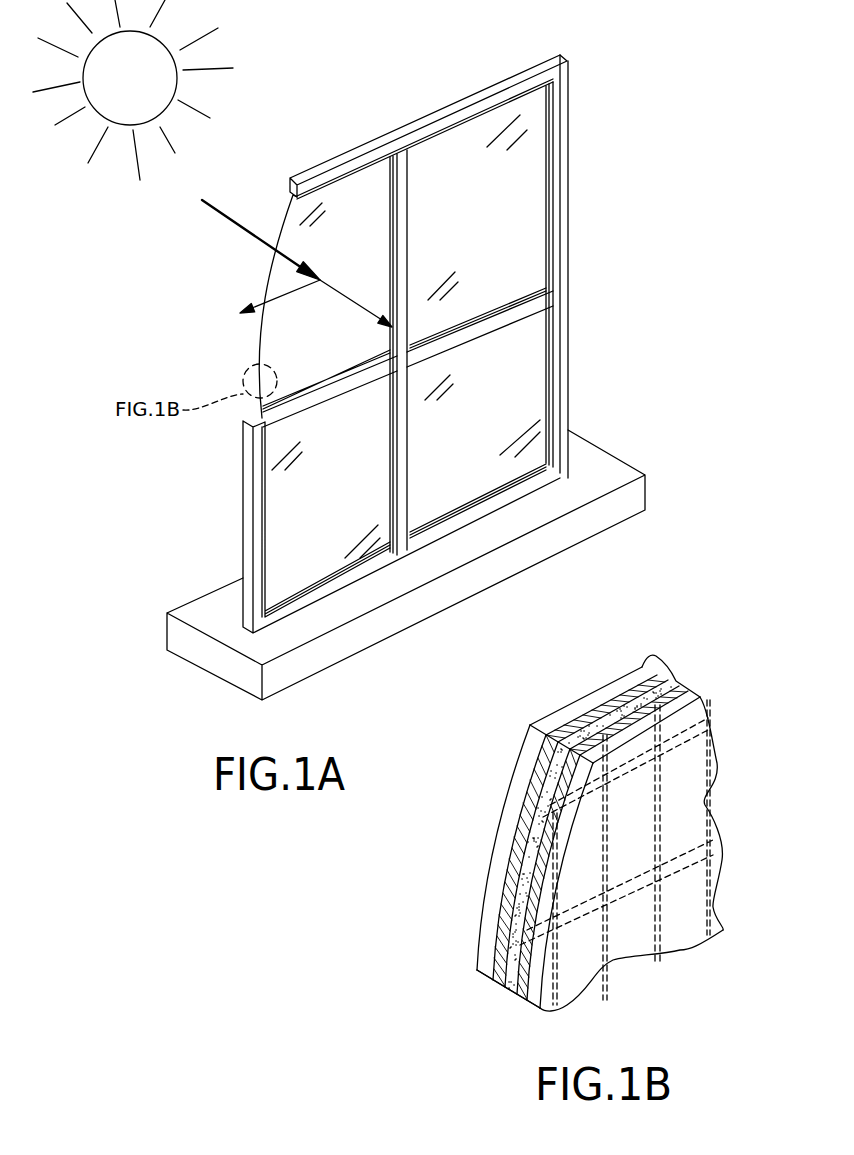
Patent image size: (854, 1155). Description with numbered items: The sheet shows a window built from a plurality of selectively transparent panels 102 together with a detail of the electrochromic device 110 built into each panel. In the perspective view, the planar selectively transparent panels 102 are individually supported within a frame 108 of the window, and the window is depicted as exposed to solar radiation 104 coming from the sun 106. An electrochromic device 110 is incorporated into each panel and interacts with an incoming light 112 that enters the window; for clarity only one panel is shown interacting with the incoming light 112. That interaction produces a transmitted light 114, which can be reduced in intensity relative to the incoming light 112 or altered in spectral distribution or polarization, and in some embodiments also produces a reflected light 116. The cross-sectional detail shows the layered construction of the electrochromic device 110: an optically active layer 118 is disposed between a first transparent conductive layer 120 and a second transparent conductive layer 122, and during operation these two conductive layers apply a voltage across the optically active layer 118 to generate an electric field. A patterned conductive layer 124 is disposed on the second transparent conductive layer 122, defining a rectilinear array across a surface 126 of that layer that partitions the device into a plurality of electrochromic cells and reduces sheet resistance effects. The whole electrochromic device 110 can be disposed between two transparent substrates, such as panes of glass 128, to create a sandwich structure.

In FIG. 1A, the selectively transparent panels 102 is at (360, 183).
In FIG. 1A, the solar radiation 104 is at (228, 68).
In FIG. 1A, the sun 106 is at (150, 88).
In FIG. 1A, the frame 108 is at (488, 90).
In FIG. 1A, the electrochromic device 110 is at (258, 348).
In FIG. 1B, the electrochromic device 110 is at (577, 845).
In FIG. 1A, the incoming light 112 is at (222, 222).
In FIG. 1A, the transmitted light 114 is at (353, 304).
In FIG. 1A, the reflected light 116 is at (252, 303).
In FIG. 1B, the optically active layer 118 is at (677, 681).
In FIG. 1B, the first transparent conductive layer 120 is at (642, 690).
In FIG. 1B, the second transparent conductive layer 122 is at (683, 681).
In FIG. 1B, the patterned conductive layer 124 is at (633, 770).
In FIG. 1B, the surface 126 is at (647, 854).
In FIG. 1B, the panes of glass 128 is at (478, 972).